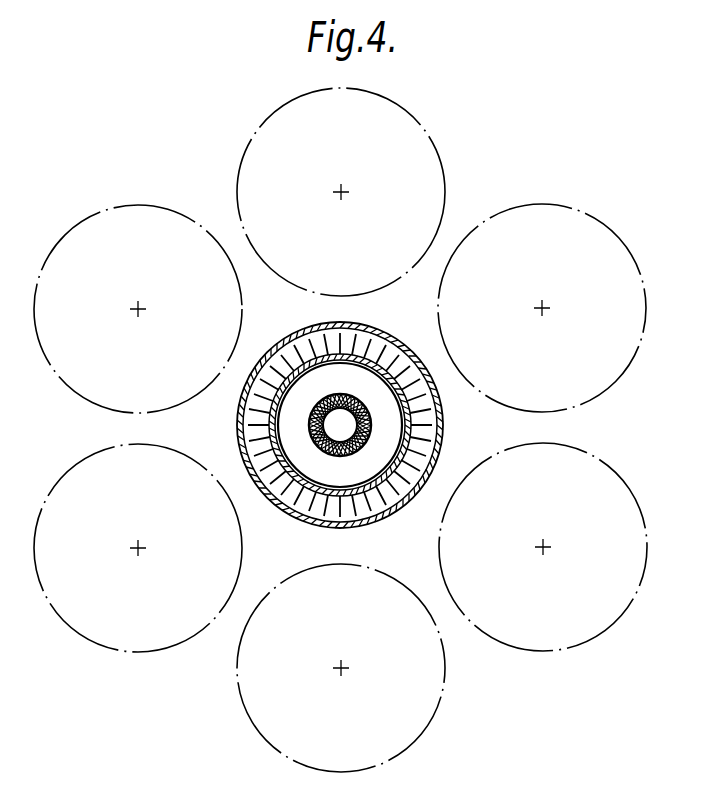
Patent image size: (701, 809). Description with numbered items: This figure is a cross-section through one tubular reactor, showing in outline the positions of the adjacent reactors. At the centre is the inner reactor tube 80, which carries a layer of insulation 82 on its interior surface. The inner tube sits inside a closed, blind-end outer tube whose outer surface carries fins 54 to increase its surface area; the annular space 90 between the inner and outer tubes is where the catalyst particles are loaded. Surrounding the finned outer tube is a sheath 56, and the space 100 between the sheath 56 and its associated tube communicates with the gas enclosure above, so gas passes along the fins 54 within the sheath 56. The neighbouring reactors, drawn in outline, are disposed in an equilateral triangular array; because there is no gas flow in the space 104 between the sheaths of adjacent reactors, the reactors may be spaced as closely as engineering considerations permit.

The fins 54 is at (366, 340).
The sheath 56 is at (297, 340).
The inner reactor tube 80 is at (325, 400).
The layer of insulation 82 is at (369, 413).
The space between the inner and outer tubes 90 is at (290, 425).
The spaces between the sheaths and their associated tubes 100 is at (334, 337).
The space between the sheaths of adjacent reactors 104 is at (494, 432).